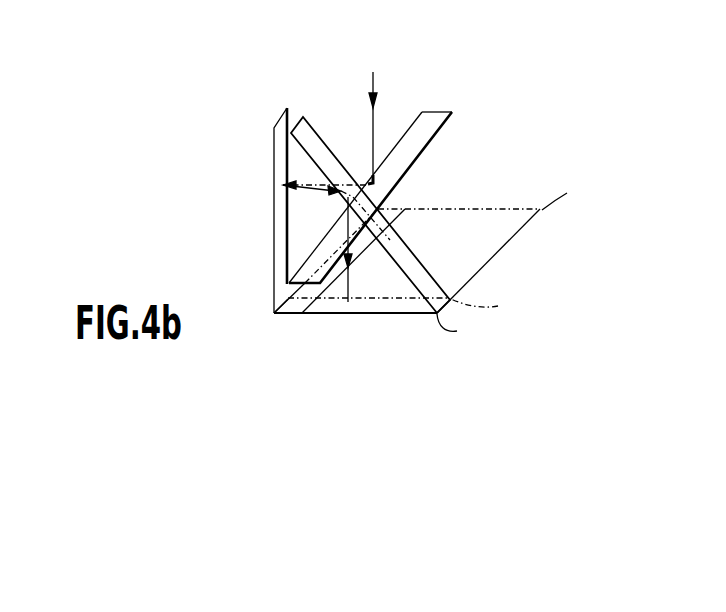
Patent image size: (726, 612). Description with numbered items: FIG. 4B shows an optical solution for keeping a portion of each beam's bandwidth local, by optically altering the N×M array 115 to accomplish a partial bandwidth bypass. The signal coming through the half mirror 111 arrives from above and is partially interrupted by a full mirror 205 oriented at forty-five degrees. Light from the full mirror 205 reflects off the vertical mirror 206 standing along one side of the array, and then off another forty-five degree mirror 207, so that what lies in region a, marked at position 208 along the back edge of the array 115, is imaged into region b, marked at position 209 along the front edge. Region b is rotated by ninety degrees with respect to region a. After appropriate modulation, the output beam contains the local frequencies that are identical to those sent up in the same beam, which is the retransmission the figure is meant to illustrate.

The half mirror 111 is at (357, 100).
The N×M array 115 is at (492, 258).
The full mirror 205 is at (437, 112).
The vertical mirror 206 is at (272, 177).
The 45° mirror 207 is at (436, 277).
The back edge position a 208 is at (397, 209).
The front edge position b 209 is at (378, 315).